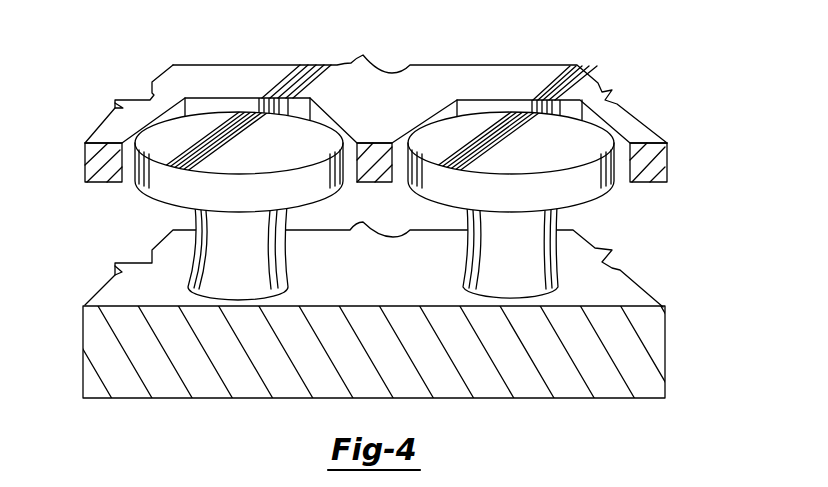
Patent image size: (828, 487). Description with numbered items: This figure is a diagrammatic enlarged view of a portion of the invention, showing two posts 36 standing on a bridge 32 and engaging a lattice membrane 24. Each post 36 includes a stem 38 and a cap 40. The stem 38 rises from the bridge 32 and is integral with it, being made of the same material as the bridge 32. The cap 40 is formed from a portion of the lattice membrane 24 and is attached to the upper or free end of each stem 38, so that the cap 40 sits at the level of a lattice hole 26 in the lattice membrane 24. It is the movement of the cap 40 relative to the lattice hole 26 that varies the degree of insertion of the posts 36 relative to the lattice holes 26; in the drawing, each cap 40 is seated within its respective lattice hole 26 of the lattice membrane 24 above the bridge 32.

The lattice membrane 24 is at (347, 62).
The lattice hole 26 is at (492, 107).
The bridge 32 is at (667, 362).
The post 36 is at (560, 222).
The stem 38 is at (477, 252).
The cap 40 is at (206, 121).